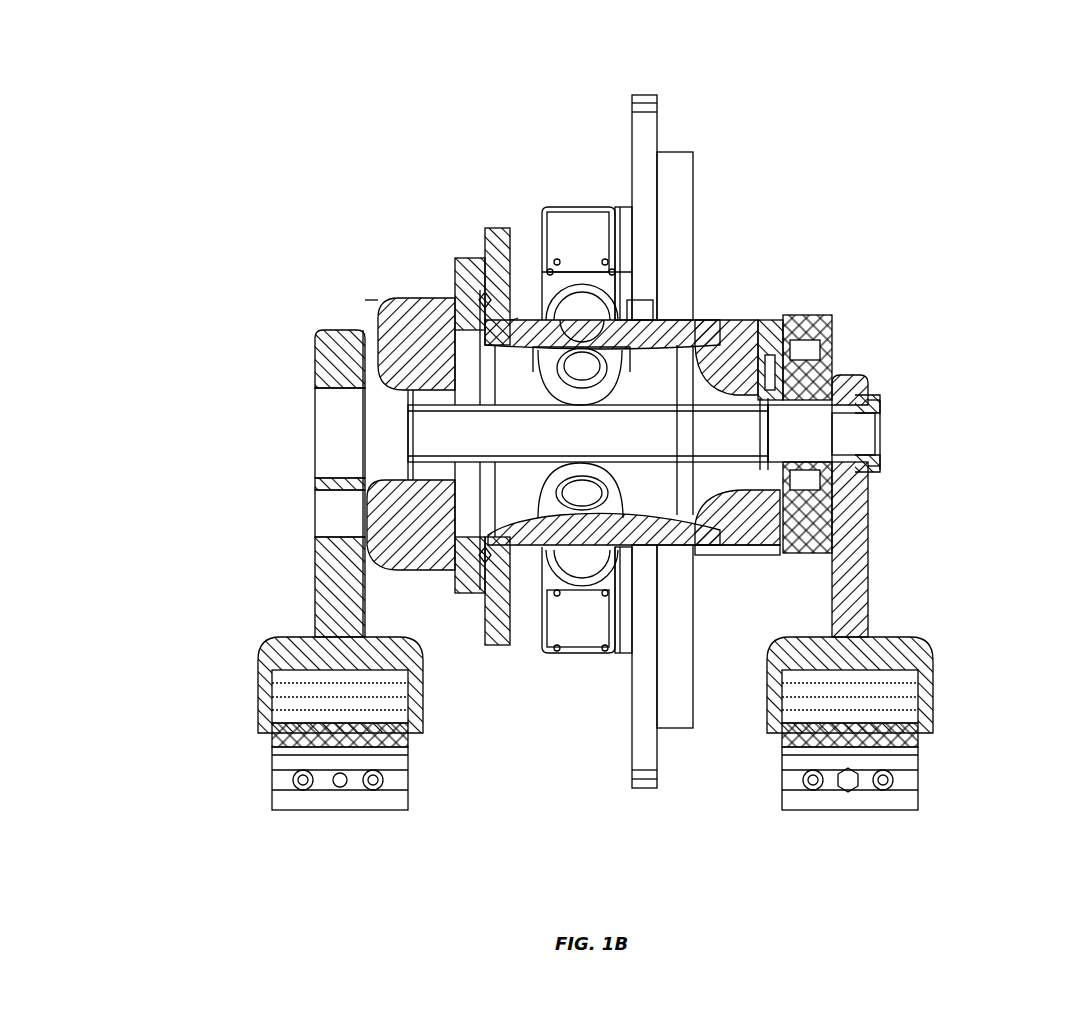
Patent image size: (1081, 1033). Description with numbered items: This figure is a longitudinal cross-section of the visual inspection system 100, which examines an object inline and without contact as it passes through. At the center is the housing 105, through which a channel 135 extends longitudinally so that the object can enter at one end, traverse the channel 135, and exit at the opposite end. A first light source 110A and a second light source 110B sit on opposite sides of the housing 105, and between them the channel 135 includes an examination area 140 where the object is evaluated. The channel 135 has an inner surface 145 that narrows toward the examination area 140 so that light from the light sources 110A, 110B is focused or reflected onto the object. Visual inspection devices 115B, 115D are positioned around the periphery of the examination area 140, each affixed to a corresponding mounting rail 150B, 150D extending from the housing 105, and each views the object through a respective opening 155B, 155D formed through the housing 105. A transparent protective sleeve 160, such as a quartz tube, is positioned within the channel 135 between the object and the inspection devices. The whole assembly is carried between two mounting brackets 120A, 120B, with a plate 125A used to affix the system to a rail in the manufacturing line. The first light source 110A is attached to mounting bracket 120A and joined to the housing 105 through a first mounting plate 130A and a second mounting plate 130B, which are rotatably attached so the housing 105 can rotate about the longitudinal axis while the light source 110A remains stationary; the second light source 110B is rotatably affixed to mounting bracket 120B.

The visual inspection system 100 is at (283, 100).
The housing 105 is at (652, 330).
The first light source 110A is at (413, 328).
The second light source 110B is at (747, 351).
The visual inspection device 115B is at (582, 236).
The visual inspection device 115D is at (578, 626).
The mounting bracket 120A is at (272, 647).
The mounting bracket 120B is at (930, 682).
The plate 125A is at (308, 798).
The first mounting plate 130A is at (466, 250).
The second mounting plate 130B is at (487, 225).
The channel 135 is at (517, 388).
The examination area 140 is at (582, 343).
The inner surface 145 is at (527, 517).
The mounting rail 150B is at (679, 170).
The mounting rail 150D is at (652, 700).
The opening 155B is at (620, 380).
The opening 155D is at (558, 512).
The transparent protective sleeve 160 is at (722, 466).